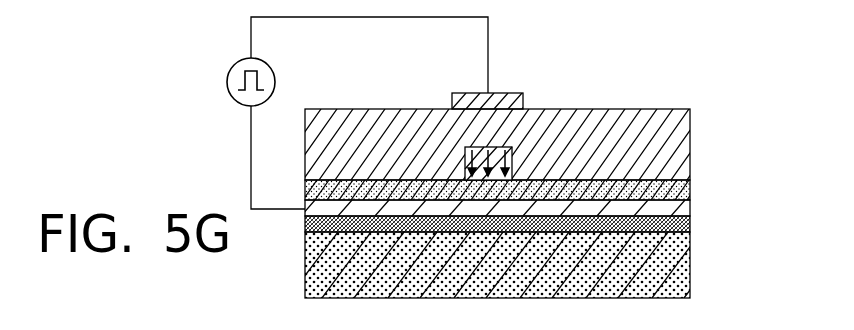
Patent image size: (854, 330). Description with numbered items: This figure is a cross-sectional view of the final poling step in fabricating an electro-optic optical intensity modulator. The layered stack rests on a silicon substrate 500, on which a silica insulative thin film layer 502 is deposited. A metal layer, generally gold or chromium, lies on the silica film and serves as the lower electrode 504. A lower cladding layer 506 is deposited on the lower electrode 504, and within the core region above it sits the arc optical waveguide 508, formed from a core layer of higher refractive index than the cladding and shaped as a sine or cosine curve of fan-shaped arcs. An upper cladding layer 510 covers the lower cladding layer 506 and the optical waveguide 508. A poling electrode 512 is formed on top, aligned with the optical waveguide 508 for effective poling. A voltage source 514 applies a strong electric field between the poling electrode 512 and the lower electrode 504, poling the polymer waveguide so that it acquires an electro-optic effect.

The silicon substrate 500 is at (692, 266).
The silica insulative thin film layer 502 is at (692, 226).
The lower electrode 504 is at (692, 205).
The lower cladding layer 506 is at (692, 184).
The optical waveguide 508 is at (530, 130).
The upper cladding layer 510 is at (692, 141).
The poling electrode 512 is at (463, 92).
The voltage source 514 is at (231, 72).